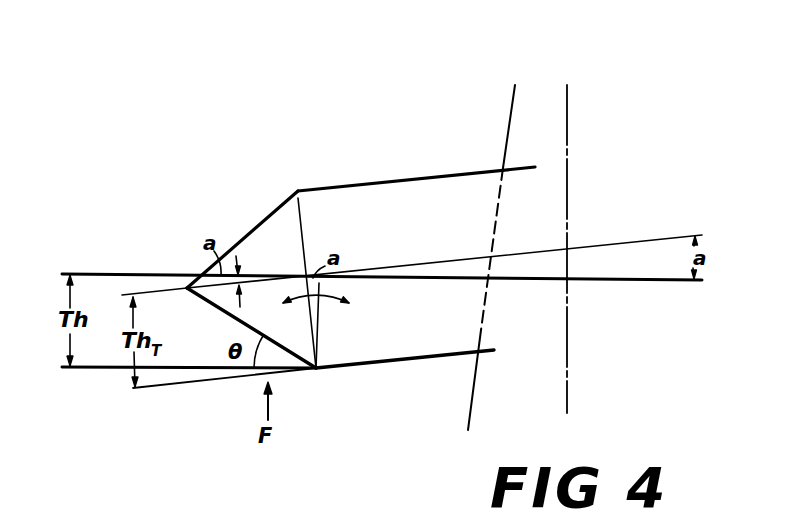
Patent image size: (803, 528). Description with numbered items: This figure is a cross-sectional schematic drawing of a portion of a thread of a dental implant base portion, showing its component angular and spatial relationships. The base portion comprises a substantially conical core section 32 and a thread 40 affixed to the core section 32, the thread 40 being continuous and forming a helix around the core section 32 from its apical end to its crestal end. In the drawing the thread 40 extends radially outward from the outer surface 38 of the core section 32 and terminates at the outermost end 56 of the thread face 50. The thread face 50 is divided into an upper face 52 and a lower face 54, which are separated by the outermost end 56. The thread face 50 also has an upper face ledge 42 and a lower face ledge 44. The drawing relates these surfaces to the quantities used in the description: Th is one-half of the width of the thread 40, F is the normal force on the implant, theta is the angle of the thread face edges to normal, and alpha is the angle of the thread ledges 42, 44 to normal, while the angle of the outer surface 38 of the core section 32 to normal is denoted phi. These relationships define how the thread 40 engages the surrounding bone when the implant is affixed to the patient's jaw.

The core section 32 is at (552, 131).
The outer surface of the core section 38 is at (470, 398).
The thread 40 is at (287, 127).
The upper face ledge 42 is at (372, 183).
The lower face ledge 44 is at (415, 363).
The thread face 50 is at (220, 388).
The upper face 52 is at (258, 222).
The lower face 54 is at (223, 317).
The outermost end 56 is at (185, 287).